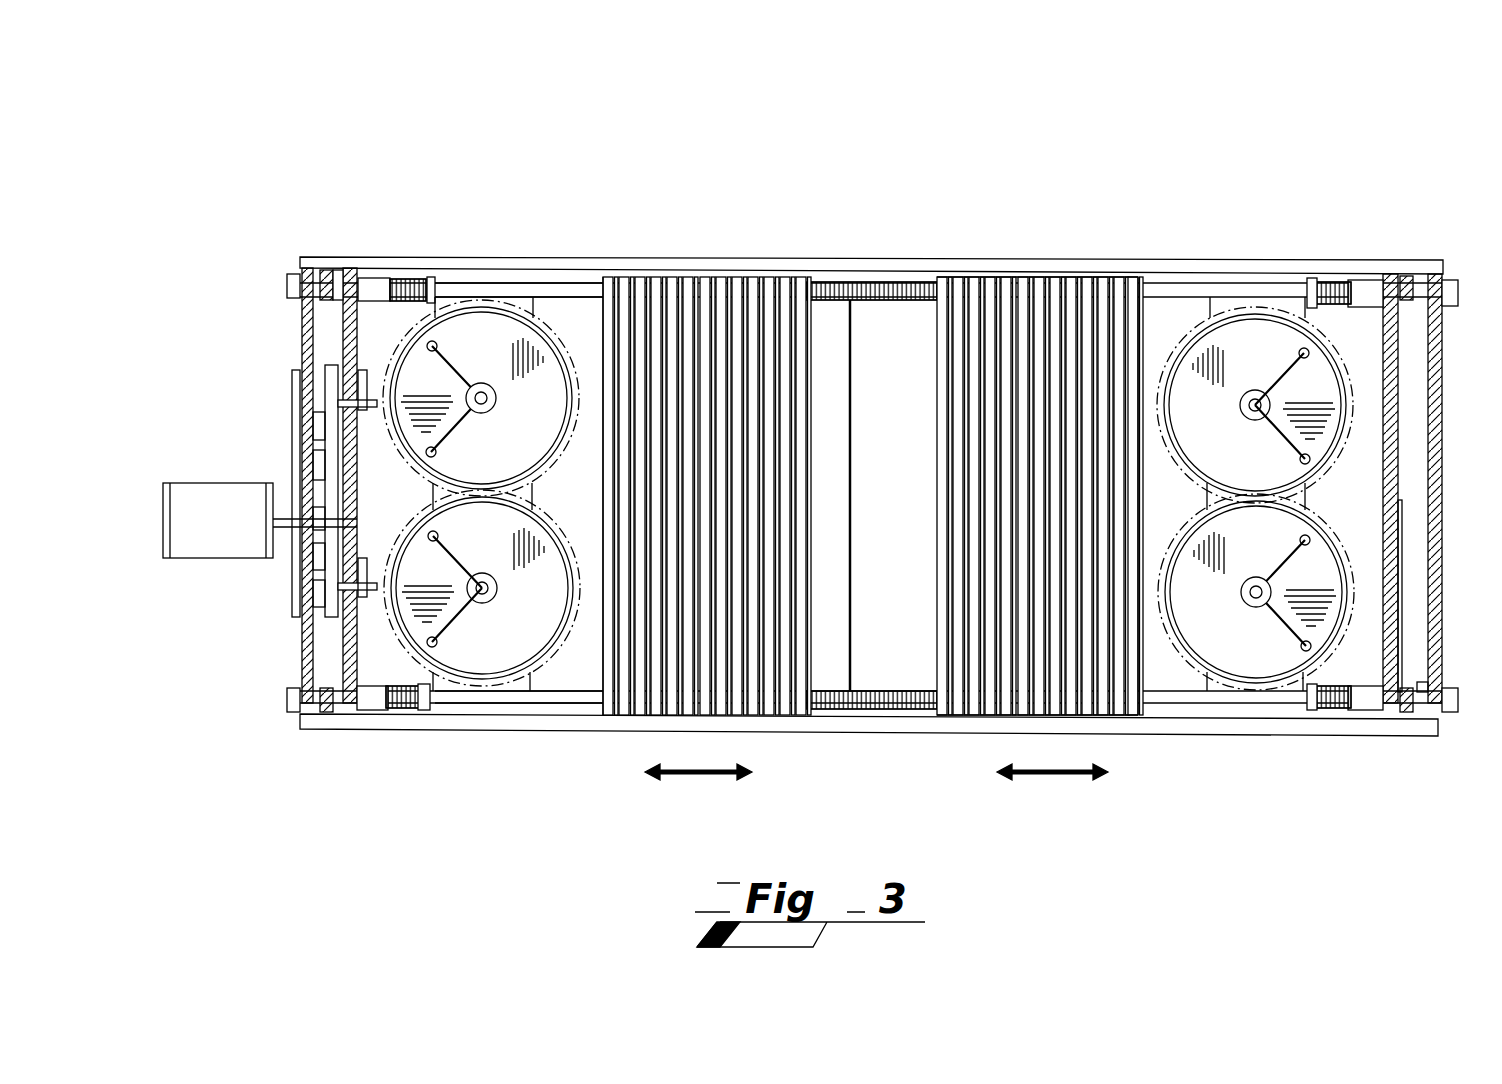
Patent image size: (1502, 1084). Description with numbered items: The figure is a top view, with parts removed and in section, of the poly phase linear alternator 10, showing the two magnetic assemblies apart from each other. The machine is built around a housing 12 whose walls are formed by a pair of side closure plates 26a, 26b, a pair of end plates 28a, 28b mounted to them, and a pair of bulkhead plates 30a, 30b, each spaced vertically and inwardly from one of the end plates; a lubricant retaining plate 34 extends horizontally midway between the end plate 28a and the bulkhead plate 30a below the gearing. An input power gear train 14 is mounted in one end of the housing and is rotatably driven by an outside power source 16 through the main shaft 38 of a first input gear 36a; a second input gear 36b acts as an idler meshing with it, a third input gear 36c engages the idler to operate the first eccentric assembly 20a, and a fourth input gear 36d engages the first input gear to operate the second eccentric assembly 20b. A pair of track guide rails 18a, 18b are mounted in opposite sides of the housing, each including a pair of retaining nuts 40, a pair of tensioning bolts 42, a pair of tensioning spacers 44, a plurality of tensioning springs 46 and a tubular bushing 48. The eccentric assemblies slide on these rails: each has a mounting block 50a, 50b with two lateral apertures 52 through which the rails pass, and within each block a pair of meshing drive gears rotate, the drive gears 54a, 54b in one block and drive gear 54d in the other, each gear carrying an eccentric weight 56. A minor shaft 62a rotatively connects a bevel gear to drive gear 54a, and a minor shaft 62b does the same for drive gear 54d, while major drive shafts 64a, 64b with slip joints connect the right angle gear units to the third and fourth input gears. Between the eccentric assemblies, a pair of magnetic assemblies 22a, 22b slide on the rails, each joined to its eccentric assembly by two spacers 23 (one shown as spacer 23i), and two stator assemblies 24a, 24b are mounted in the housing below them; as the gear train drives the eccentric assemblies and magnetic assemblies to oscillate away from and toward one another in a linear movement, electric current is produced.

The poly phase linear alternator 10 is at (825, 476).
The housing 12 is at (765, 258).
The input power gear train 14 is at (333, 362).
The outside power source 16 is at (210, 531).
The track guide rail 18a is at (543, 290).
The track guide rail 18b is at (547, 697).
The first eccentric assembly 20a is at (397, 322).
The second eccentric assembly 20b is at (1193, 322).
The magnetic assembly 22a is at (676, 276).
The magnetic assembly 22b is at (1052, 276).
The spacer 23 is at (583, 268).
The inner end plate 23i is at (1147, 270).
The stator assembly 24a is at (862, 315).
The stator assembly 24b is at (887, 660).
The side closure plate 26a is at (953, 268).
The side closure plate 26b is at (967, 715).
The end plate 28a is at (300, 658).
The end plate 28b is at (1443, 608).
The bulkhead plate 30a is at (347, 633).
The bulkhead plate 30b is at (1400, 508).
The lubricant retaining plate 34 is at (297, 680).
The first input gear 36a is at (347, 558).
The second input gear 36b is at (332, 441).
The third input gear 36c is at (328, 427).
The fourth input gear 36d is at (337, 610).
The main shaft 38 is at (292, 505).
The retaining nut 40 is at (287, 280).
The tensioning bolt 42 is at (330, 272).
The tensioning spacer 44 is at (338, 277).
The tensioning spring 46 is at (413, 280).
The tubular bushing 48 is at (503, 277).
The mounting block 50a is at (541, 500).
The mounting block 50b is at (1220, 425).
The lateral aperture 52 is at (500, 288).
The drive gear 54a is at (550, 423).
The drive gear 54b is at (545, 618).
The drive gear 54d is at (1200, 603).
The eccentric weight 56 is at (458, 364).
The minor shaft 62a is at (488, 410).
The minor shaft 62b is at (1256, 603).
The major drive shaft 64a is at (375, 402).
The major drive shaft 64b is at (350, 585).